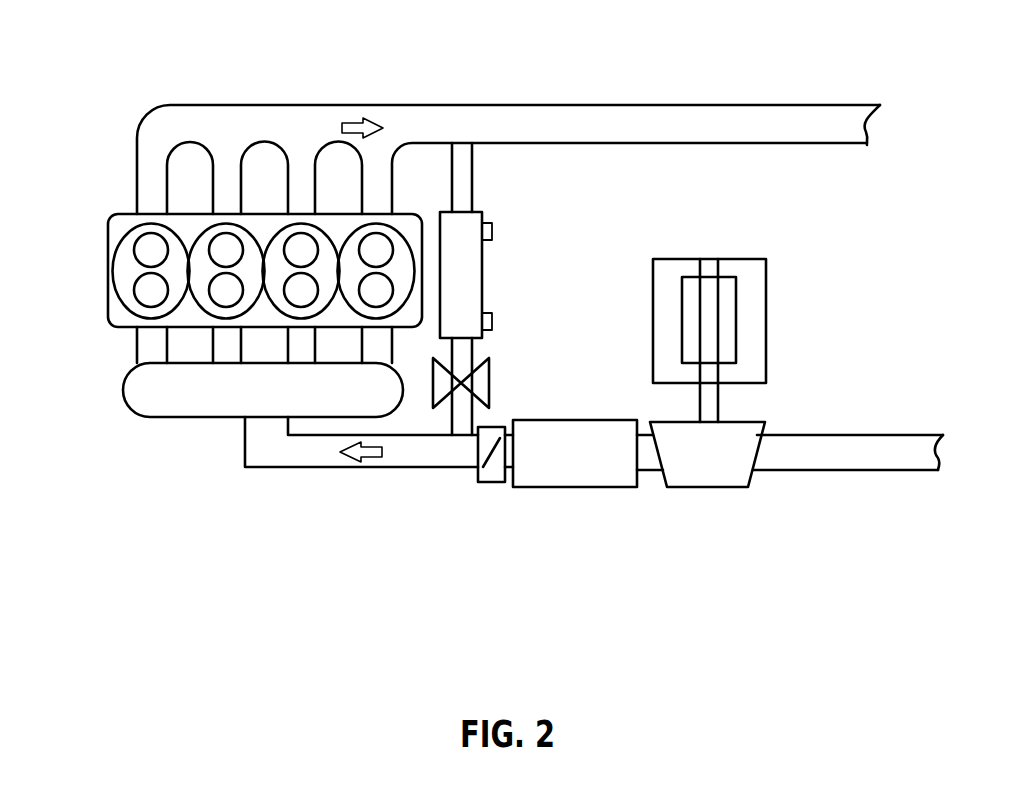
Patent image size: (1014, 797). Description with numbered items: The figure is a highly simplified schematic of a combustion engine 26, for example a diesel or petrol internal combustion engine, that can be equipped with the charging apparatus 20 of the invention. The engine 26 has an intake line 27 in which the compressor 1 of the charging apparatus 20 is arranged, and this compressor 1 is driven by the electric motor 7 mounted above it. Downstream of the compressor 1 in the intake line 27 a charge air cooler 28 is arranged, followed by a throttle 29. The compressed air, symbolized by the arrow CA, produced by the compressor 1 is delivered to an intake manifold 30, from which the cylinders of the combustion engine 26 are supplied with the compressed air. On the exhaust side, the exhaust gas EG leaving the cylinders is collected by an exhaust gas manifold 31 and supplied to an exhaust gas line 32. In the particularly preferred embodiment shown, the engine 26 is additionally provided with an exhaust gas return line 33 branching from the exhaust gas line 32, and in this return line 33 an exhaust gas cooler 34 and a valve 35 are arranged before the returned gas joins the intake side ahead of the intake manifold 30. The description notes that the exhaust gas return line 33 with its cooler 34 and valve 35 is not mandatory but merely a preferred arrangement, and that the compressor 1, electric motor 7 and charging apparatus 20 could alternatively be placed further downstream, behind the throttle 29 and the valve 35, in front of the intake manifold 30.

The compressor 1 is at (705, 497).
The electric motor 7 is at (772, 293).
The charging apparatus 20 is at (783, 380).
The combustion engine 26 is at (102, 235).
The intake line 27 is at (867, 462).
The charge air cooler 28 is at (582, 462).
The throttle 29 is at (490, 482).
The intake manifold 30 is at (180, 398).
The exhaust gas manifold 31 is at (228, 125).
The exhaust gas line 32 is at (465, 123).
The exhaust gas return line 33 is at (463, 177).
The exhaust gas cooler 34 is at (467, 272).
The valve 35 is at (480, 382).
The exhaust gas EG is at (350, 127).
The compressed air CA is at (373, 460).